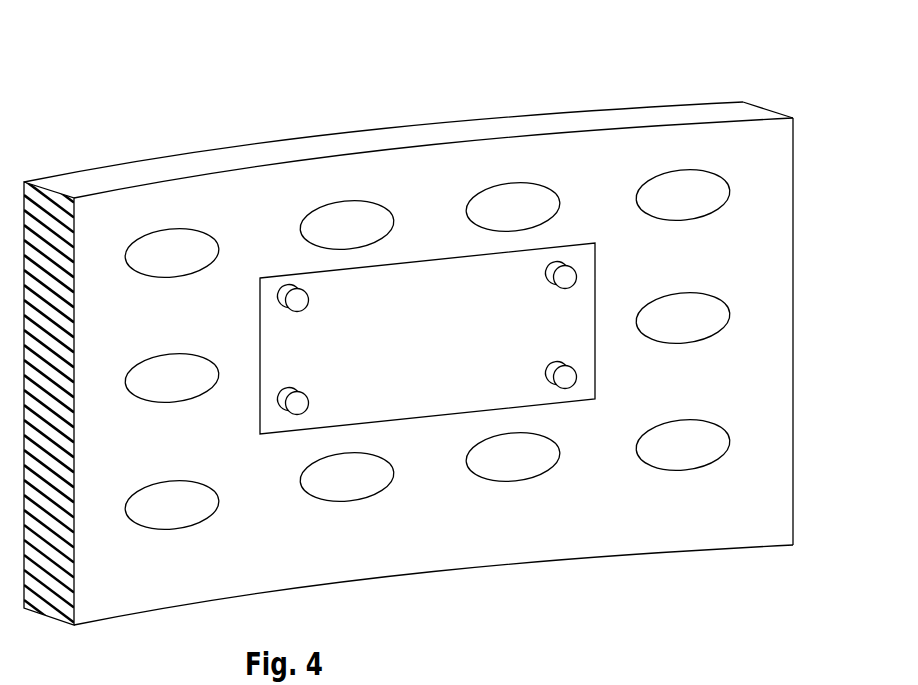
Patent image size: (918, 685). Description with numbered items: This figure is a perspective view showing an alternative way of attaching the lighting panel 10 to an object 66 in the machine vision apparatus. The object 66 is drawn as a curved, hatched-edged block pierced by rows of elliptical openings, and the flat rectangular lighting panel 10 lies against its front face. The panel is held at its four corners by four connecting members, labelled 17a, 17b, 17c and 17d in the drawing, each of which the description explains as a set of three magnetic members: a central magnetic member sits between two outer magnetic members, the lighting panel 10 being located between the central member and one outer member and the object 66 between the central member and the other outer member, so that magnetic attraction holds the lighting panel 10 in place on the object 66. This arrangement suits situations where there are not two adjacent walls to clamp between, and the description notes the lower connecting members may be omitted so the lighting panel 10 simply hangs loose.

The lighting panel 10 is at (422, 395).
The fastener 17a is at (299, 280).
The fastener 17b is at (566, 265).
The fastener 17c is at (270, 405).
The fastener 17d is at (588, 379).
The object 66 is at (674, 532).